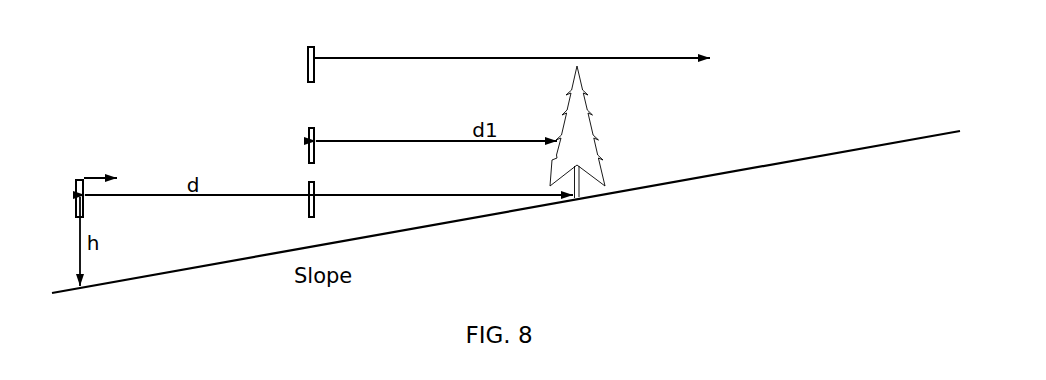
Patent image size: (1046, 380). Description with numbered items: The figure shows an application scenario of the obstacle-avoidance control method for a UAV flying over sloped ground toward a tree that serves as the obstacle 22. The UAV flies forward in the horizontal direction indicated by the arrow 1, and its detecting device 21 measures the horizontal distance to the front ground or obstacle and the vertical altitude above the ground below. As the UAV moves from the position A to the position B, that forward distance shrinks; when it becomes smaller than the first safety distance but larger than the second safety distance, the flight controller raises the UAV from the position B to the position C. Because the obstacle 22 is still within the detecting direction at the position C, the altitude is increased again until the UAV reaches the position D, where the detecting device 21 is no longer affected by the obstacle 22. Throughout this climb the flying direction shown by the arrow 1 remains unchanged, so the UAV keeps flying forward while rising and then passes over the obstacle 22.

The arrow 1 is at (108, 185).
The detecting device 21 is at (179, 137).
The obstacle 22 is at (593, 118).
The position A is at (82, 188).
The position B is at (311, 190).
The position C is at (311, 133).
The position D is at (311, 55).